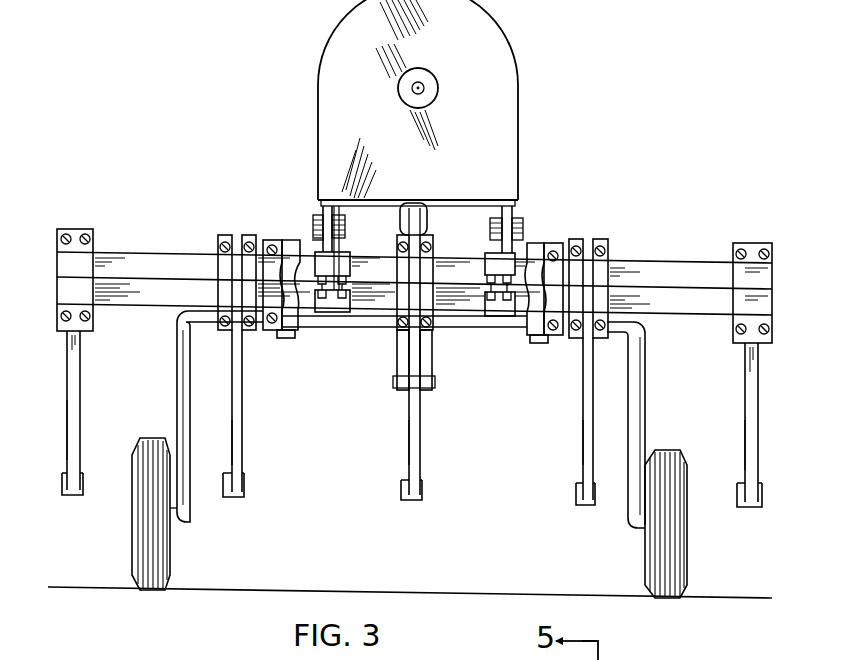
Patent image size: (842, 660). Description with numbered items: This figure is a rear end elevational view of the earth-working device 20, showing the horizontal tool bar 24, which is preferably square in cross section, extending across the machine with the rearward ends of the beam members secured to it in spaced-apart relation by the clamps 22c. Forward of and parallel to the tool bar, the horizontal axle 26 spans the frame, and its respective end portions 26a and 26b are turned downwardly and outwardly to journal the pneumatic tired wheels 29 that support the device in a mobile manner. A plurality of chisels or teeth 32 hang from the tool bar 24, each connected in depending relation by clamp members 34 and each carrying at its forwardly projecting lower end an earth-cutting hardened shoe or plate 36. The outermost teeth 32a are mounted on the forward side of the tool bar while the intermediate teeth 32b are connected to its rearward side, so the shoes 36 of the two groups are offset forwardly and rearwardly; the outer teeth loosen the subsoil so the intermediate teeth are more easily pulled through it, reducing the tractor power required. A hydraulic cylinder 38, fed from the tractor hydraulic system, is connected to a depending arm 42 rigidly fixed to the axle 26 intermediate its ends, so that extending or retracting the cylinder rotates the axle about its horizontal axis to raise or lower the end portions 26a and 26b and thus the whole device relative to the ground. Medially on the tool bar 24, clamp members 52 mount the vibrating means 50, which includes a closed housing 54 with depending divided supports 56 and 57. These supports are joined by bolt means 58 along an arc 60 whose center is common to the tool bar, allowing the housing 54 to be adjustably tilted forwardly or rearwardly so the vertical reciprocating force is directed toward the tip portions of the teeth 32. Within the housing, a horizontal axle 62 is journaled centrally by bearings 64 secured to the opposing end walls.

The device 20 is at (178, 184).
The clamps 22c is at (268, 337).
The tool bar 24 is at (674, 265).
The axle 26 is at (348, 332).
The end portion of axle 26a is at (646, 419).
The end portion of axle 26b is at (177, 400).
The pneumatic tired wheels 29 is at (133, 548).
The chisels or teeth 32 is at (83, 394).
The outermost teeth 32a is at (83, 428).
The intermediate teeth 32b is at (244, 447).
The clamp members 34 is at (86, 231).
The shoe or plate 36 is at (83, 480).
The hydraulic cylinder 38 is at (402, 206).
The depending arm 42 is at (433, 358).
The vibrating means 50 is at (316, 123).
The clamp members 52 is at (348, 257).
The housing 54 is at (318, 106).
The support 56 is at (323, 210).
The support 57 is at (340, 249).
The bolt means 58 is at (313, 222).
The arc 60 is at (318, 240).
The axle 62 is at (424, 94).
The bearings 64 is at (429, 79).